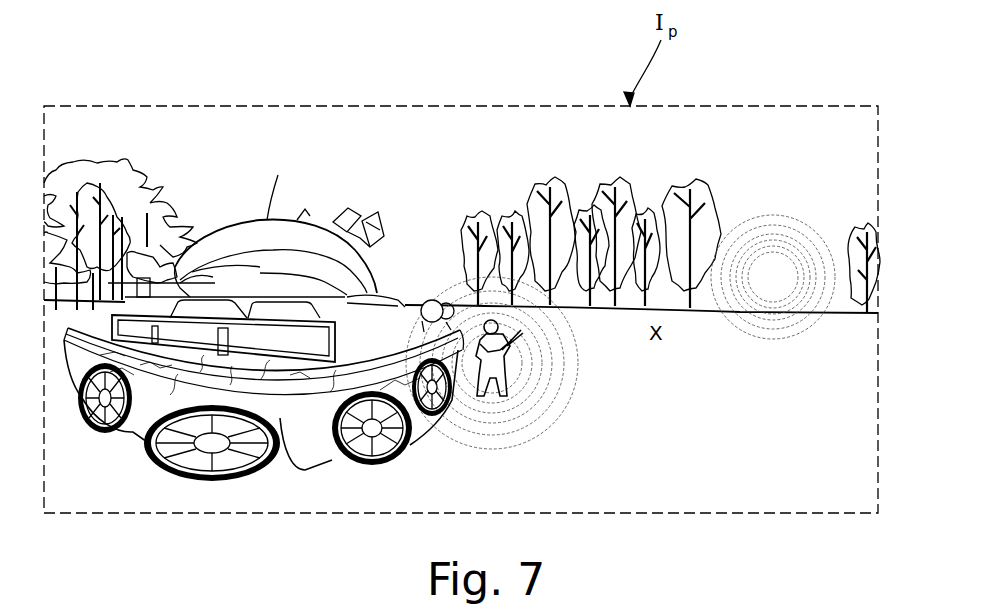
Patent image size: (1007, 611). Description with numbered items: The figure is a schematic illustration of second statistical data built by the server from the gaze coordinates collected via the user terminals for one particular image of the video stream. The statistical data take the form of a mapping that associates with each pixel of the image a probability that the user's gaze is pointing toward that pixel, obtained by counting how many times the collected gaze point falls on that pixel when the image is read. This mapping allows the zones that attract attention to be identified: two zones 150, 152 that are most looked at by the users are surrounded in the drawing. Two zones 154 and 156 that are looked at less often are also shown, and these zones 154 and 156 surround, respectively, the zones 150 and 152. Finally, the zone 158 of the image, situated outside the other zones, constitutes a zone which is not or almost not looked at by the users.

The zone most looked at by users 150 is at (473, 320).
The zone most looked at by users 152 is at (773, 278).
The zone looked at less often 154 is at (540, 393).
The zone looked at less often 156 is at (812, 302).
The zone not or almost not looked at 158 is at (852, 448).